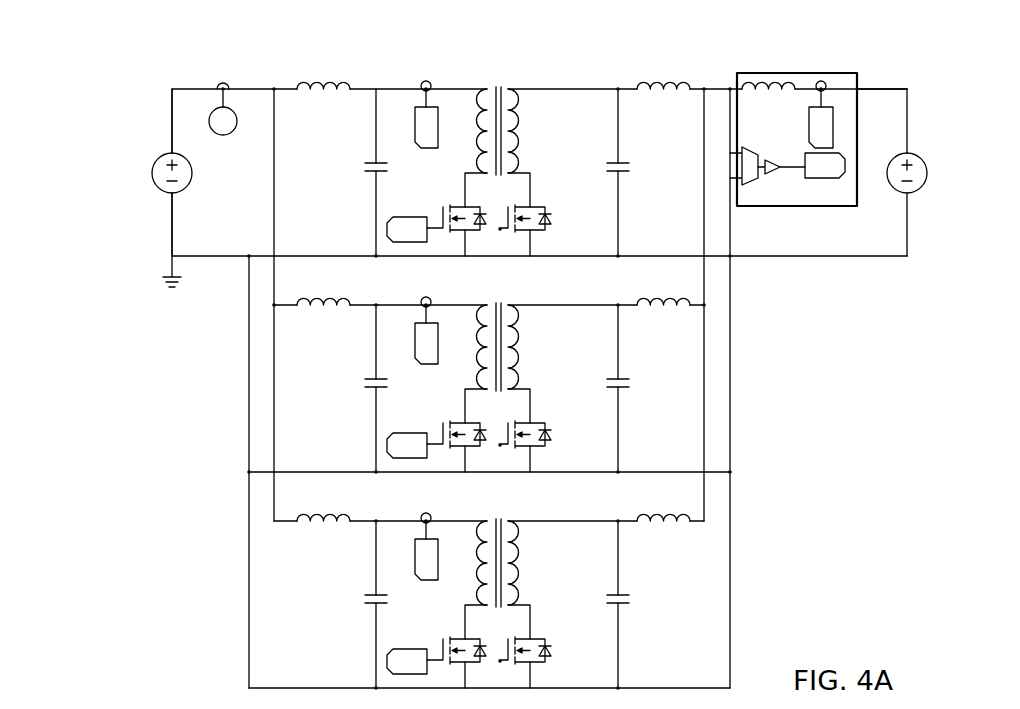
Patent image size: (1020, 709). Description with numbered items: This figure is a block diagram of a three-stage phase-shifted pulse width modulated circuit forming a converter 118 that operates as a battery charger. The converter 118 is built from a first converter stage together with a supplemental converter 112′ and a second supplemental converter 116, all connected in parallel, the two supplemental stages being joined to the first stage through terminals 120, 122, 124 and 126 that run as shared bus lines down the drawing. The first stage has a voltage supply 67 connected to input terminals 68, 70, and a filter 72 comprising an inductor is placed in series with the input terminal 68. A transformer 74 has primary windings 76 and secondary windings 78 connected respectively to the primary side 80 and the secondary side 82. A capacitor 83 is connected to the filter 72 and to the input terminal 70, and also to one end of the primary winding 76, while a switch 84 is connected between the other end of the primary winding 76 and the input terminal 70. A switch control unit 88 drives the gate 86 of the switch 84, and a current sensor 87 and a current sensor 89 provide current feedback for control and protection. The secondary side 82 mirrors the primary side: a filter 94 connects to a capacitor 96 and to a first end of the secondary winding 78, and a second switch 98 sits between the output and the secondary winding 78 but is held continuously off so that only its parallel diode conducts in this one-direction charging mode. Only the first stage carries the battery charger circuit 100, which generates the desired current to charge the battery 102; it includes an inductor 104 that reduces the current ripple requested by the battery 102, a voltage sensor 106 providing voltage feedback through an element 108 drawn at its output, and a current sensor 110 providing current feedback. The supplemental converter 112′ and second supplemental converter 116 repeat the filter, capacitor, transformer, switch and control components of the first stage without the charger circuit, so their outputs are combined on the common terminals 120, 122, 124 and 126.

The voltage supply 67 is at (186, 190).
The input terminal 68 is at (172, 118).
The input terminal 70 is at (172, 228).
The filter 72 is at (340, 96).
The transformer 74 is at (499, 300).
The primary windings 76 is at (477, 129).
The secondary windings 78 is at (518, 130).
The primary side 80 is at (448, 82).
The secondary side 82 is at (567, 84).
The capacitor 83 is at (370, 161).
The switch 84 is at (467, 233).
The gate 86 is at (443, 207).
The current sensor 87 is at (226, 135).
The switch control unit 88 is at (405, 217).
The current sensor 89 is at (415, 127).
The filter 94 is at (671, 92).
The capacitor 96 is at (612, 162).
The second switch 98 is at (547, 207).
The battery charger circuit 100 is at (858, 76).
The battery 102 is at (918, 190).
The inductor 104 is at (770, 92).
The voltage sensor 106 is at (759, 183).
The buffer amplifier 108 is at (803, 152).
The current sensor 110 is at (833, 132).
The supplemental converter 112′ is at (778, 366).
The second supplemental converter 116 is at (778, 576).
The converter 118 is at (101, 101).
The terminal 120 is at (249, 276).
The terminal 122 is at (274, 270).
The terminal 124 is at (704, 277).
The terminal 126 is at (730, 270).